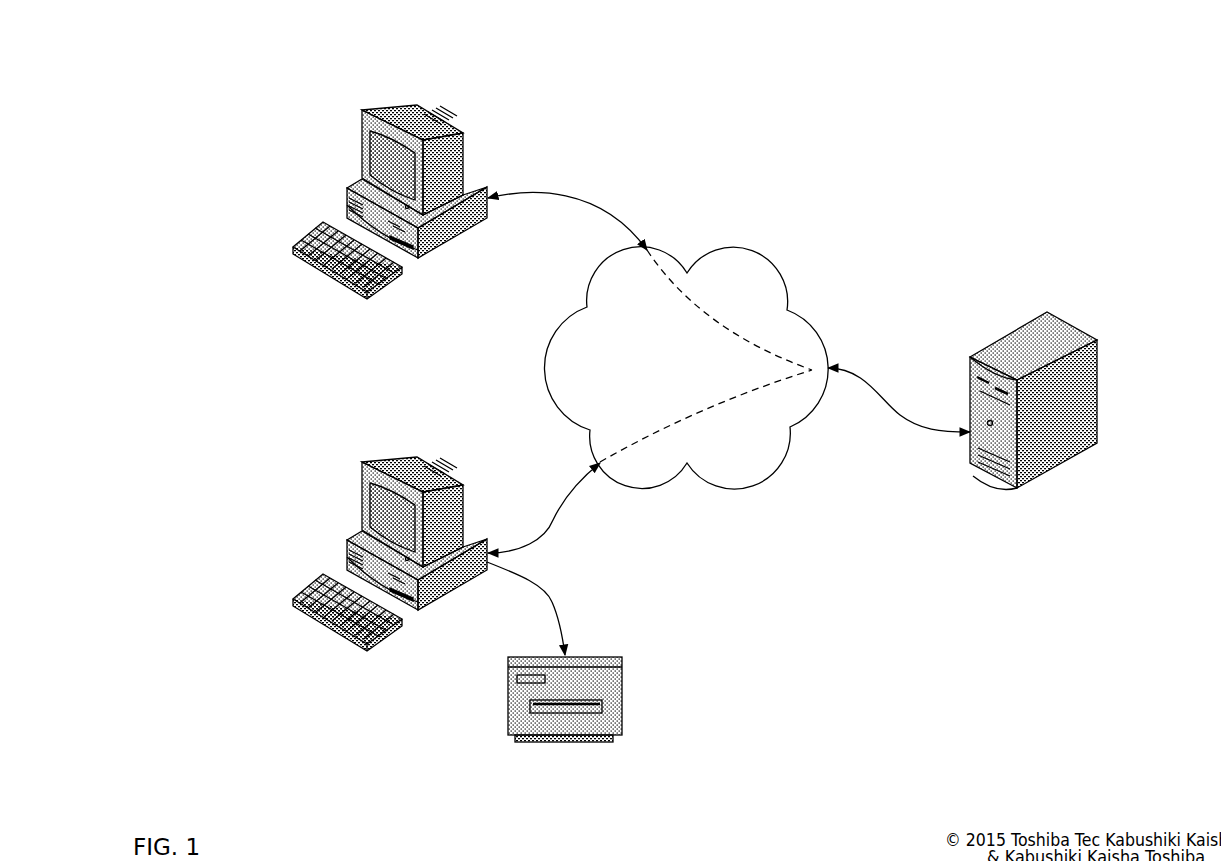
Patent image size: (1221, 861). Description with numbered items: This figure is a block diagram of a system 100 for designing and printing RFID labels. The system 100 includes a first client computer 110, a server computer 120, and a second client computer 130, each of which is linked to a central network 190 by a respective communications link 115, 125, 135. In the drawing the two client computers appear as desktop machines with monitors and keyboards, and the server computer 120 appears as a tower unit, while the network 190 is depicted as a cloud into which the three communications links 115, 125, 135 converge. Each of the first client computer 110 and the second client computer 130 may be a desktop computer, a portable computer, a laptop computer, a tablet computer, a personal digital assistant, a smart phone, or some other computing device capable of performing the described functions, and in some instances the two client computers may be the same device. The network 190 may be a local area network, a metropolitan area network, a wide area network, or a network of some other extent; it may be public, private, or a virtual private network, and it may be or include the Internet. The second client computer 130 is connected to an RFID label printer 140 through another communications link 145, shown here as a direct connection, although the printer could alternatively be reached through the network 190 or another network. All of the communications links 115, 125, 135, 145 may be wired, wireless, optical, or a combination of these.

The system 100 is at (228, 90).
The first client computer 110 is at (361, 137).
The communications link 115 is at (558, 192).
The server computer 120 is at (1073, 323).
The communications link 125 is at (900, 415).
The second client computer 130 is at (362, 488).
The communications link 135 is at (550, 518).
The RFID label printer 140 is at (622, 695).
The communications link 145 is at (552, 602).
The network 190 is at (686, 368).